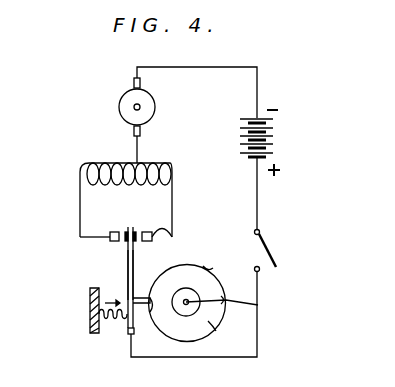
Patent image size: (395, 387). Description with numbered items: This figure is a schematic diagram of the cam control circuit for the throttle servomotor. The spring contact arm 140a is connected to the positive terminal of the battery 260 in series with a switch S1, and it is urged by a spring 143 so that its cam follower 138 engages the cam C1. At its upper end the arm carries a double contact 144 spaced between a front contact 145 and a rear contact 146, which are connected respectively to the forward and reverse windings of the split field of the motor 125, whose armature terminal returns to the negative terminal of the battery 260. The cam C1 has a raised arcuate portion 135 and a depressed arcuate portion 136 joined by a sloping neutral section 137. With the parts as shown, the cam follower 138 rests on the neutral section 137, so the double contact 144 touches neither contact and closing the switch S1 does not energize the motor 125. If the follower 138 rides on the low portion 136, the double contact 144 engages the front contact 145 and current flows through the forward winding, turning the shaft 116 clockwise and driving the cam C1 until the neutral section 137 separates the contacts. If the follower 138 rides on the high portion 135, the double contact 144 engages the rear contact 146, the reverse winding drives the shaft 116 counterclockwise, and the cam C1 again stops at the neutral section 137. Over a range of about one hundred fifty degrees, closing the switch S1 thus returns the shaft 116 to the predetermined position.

The shaft 116 is at (141, 103).
The motor 125 is at (147, 152).
The battery 260 is at (246, 170).
The double contact 144 is at (130, 270).
The front contact 145 is at (163, 244).
The rear contact 146 is at (110, 239).
The spring contact arm 140a is at (128, 258).
The cam follower 138 is at (143, 296).
The depressed arcuate portion 136 is at (195, 265).
The neutral section 137 is at (164, 311).
The raised arcuate portion 135 is at (213, 328).
The spring 143 is at (117, 320).
The cam C1 is at (221, 296).
The switch S1 is at (272, 251).